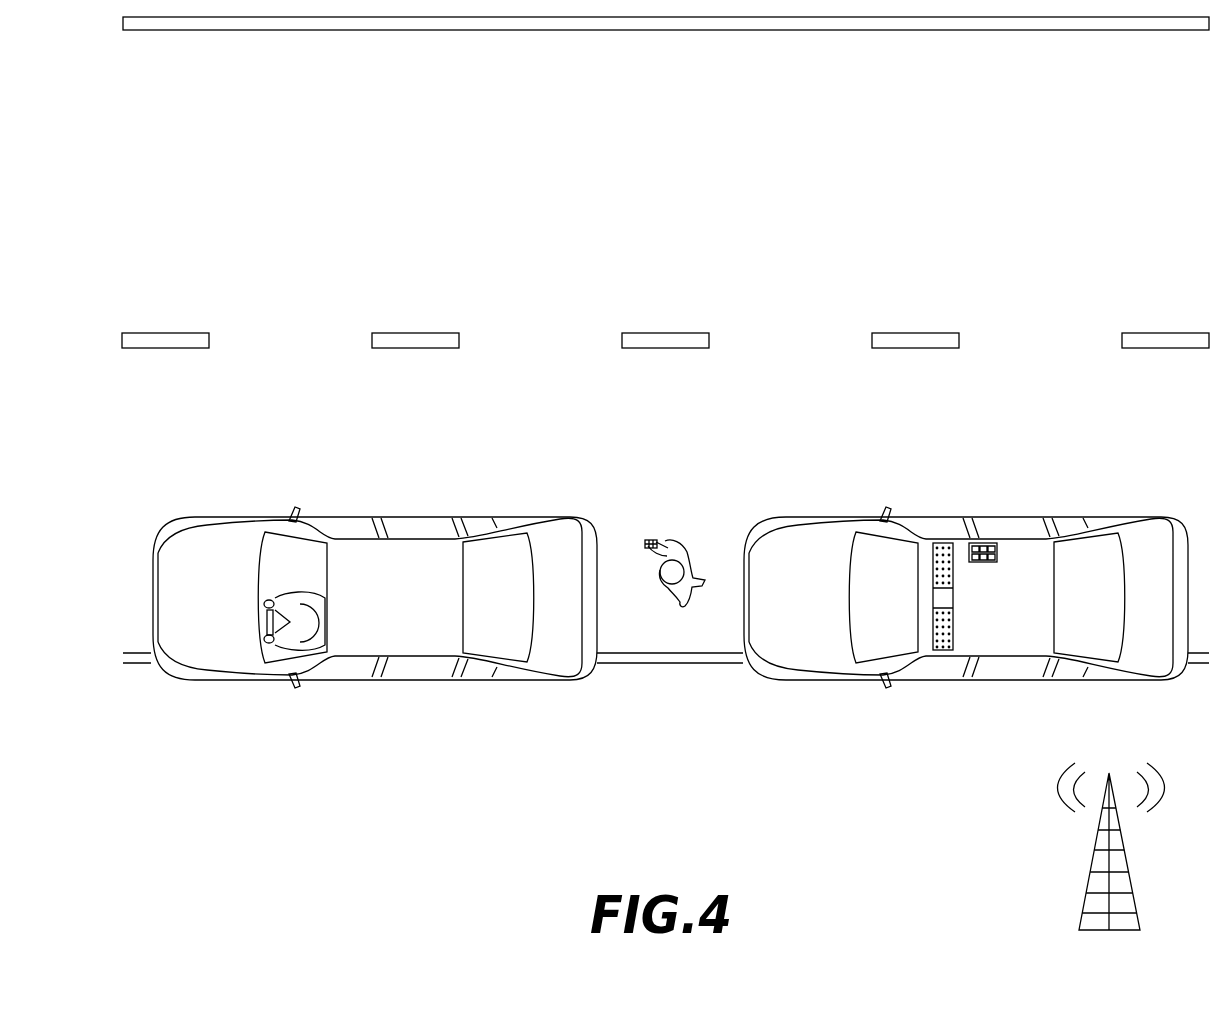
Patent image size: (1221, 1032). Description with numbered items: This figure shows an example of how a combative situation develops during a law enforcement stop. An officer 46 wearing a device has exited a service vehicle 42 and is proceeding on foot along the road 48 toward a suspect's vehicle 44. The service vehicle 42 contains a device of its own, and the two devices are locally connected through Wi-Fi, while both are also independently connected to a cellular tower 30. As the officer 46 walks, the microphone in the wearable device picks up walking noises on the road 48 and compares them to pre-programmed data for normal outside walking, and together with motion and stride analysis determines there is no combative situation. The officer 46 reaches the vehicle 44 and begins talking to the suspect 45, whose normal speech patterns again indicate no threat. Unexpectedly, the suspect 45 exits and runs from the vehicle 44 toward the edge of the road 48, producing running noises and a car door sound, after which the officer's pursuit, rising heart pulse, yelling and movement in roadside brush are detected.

The cellular tower 30 is at (1130, 880).
The service vehicle 42 is at (966, 606).
The suspect's vehicle 44 is at (361, 643).
The suspect 45 is at (269, 625).
The officer 46 is at (683, 573).
The road 48 is at (631, 633).